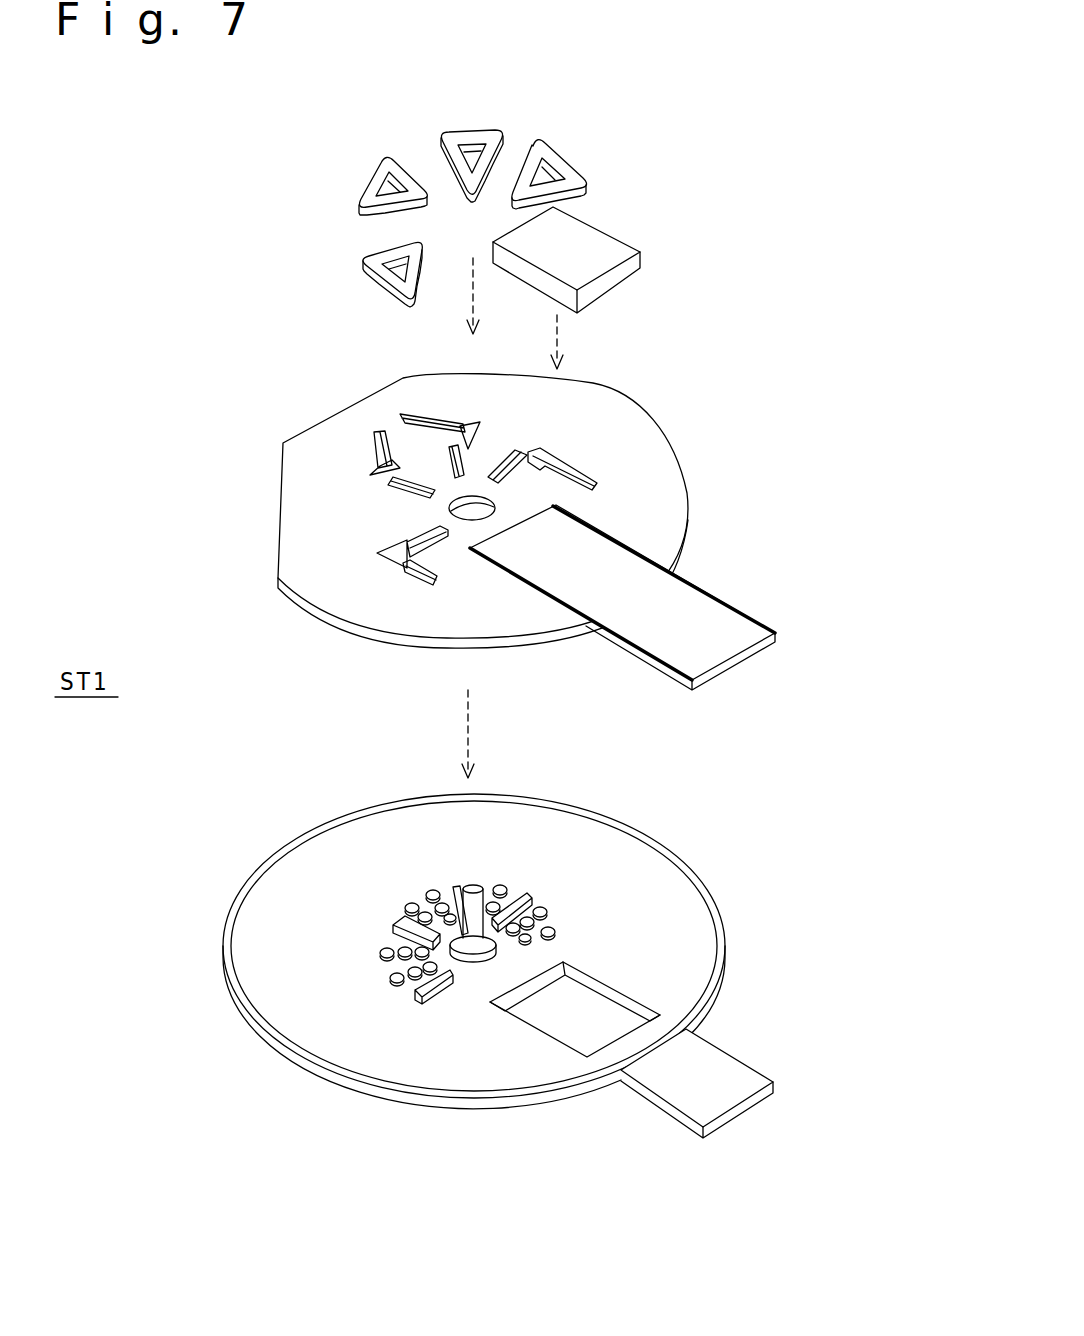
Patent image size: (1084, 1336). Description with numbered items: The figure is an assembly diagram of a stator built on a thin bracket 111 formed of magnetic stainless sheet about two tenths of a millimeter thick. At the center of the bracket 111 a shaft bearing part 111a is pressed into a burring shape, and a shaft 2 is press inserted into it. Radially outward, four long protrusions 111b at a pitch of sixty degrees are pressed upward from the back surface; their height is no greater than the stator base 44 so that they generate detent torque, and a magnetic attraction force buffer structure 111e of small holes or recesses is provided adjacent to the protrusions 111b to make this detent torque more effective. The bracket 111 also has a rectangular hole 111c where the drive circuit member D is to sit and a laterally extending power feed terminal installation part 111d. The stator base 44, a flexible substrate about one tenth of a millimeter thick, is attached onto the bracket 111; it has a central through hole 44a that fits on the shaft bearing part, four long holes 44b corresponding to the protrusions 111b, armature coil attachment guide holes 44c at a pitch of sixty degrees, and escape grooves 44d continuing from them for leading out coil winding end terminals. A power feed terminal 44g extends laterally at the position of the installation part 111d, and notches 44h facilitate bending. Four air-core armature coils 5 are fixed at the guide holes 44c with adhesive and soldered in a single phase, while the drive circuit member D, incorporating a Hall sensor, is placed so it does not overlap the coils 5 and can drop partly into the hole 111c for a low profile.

The air-core armature coil 5 is at (375, 183).
The drive circuit member D is at (588, 247).
The stator base 44 is at (690, 427).
The central through hole 44a is at (480, 510).
The long hole 44b is at (400, 483).
The armature coil attachment guide hole 44c is at (377, 453).
The escape groove 44d is at (387, 565).
The power feed terminal 44g is at (703, 622).
The notch 44h is at (553, 597).
The bracket 111 is at (705, 850).
The shaft bearing part 111a is at (423, 903).
The protrusion 111b is at (523, 893).
The rectangular hole 111c is at (575, 1023).
The power feed terminal installation part 111d is at (715, 1062).
The magnetic attraction force buffer structure 111e is at (377, 948).
The shaft 2 is at (474, 889).